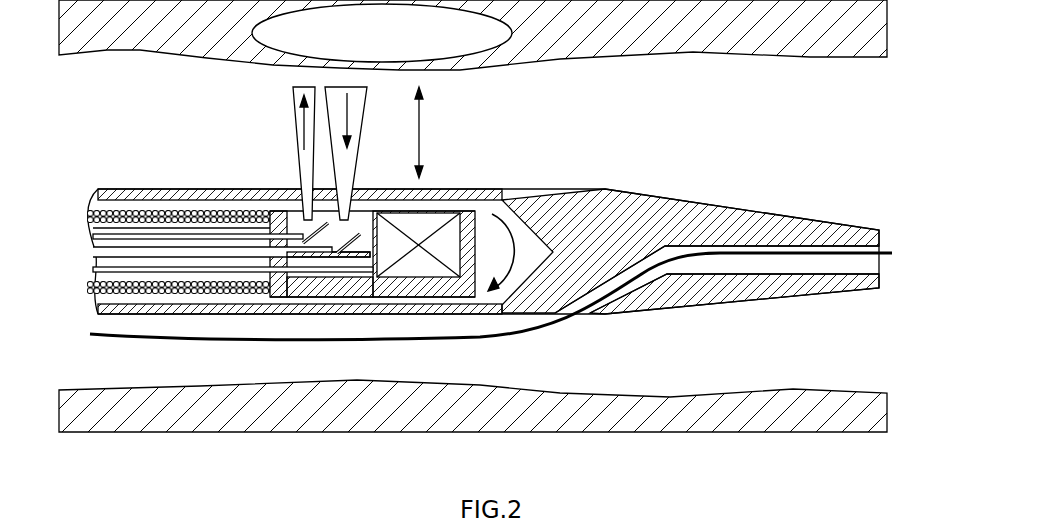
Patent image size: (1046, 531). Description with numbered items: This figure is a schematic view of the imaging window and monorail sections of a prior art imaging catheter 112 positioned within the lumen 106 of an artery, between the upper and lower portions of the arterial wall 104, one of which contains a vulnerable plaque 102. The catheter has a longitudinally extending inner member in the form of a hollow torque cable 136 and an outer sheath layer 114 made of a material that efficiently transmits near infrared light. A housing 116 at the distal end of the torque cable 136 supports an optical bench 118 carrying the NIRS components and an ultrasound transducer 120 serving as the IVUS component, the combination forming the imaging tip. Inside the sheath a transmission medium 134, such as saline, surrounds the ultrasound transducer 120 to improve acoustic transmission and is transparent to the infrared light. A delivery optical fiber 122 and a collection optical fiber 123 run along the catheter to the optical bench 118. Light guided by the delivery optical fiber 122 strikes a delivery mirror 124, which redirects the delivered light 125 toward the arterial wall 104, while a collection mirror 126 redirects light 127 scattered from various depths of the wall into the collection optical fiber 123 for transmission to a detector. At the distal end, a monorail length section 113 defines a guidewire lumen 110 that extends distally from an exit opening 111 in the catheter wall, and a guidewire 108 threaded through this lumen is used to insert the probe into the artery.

The vulnerable plaque 102 is at (368, 44).
The arterial wall 104 is at (793, 48).
The lumen 106 is at (572, 135).
The guidewire 108 is at (197, 340).
The guidewire lumen 110 is at (807, 266).
The exit opening 111 is at (592, 312).
The imaging catheter 112 is at (665, 172).
The monorail length section 113 is at (788, 221).
The outer sheath layer 114 is at (162, 192).
The housing 116 is at (455, 290).
The optical bench 118 is at (293, 217).
The ultrasound transducer 120 is at (430, 216).
The delivery optical fiber 122 is at (93, 235).
The collection optical fiber 123 is at (98, 248).
The delivery mirror 124 is at (322, 236).
The delivered light 125 is at (297, 113).
The collection mirror 126 is at (358, 248).
The scattered light 127 is at (361, 126).
The transmission medium 134 is at (506, 289).
The torque cable 136 is at (86, 214).